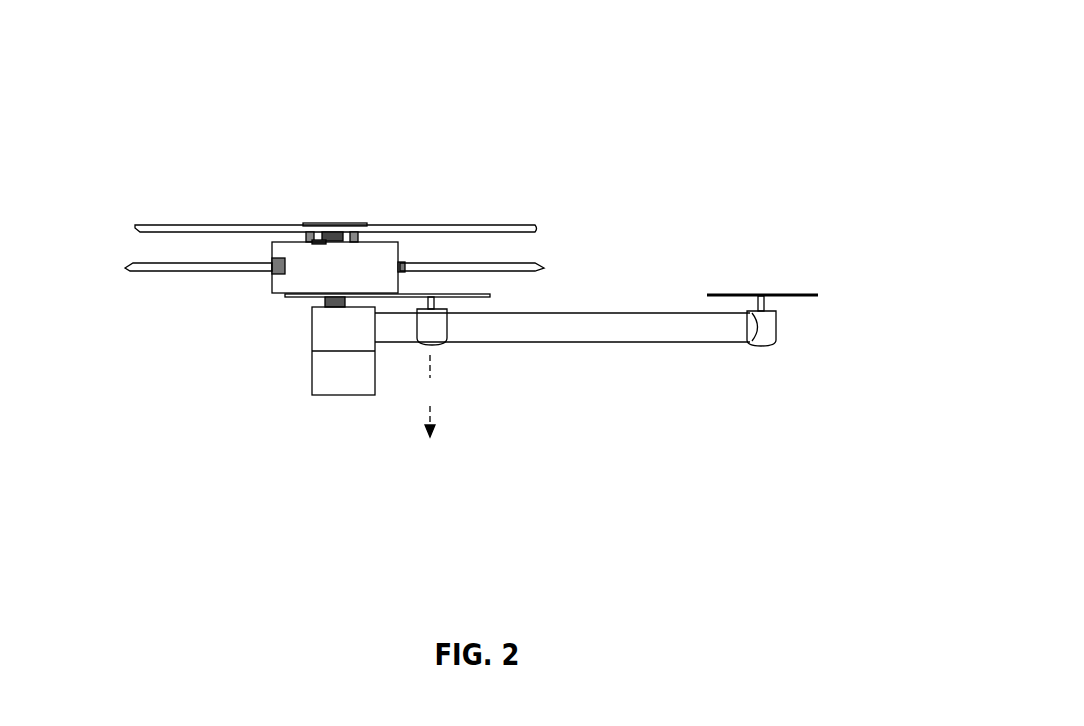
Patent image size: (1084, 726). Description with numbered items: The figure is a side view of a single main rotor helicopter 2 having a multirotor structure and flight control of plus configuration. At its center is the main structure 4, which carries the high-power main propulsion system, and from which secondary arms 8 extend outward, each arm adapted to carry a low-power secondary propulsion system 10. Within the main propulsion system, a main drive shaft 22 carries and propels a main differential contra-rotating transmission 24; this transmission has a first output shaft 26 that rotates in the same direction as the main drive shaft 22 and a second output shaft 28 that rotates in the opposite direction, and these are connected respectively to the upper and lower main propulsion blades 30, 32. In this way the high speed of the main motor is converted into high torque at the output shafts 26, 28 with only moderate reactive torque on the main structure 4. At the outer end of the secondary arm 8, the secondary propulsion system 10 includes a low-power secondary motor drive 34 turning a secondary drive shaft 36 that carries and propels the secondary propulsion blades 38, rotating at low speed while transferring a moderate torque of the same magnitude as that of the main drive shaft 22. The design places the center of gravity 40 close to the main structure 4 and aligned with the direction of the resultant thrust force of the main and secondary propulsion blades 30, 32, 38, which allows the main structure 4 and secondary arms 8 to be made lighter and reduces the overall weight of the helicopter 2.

The single main rotor helicopter 2 is at (503, 131).
The main structure 4 is at (343, 372).
The secondary arm 8 is at (667, 325).
The secondary propulsion system 10 is at (433, 330).
The main drive shaft 22 is at (312, 302).
The main differential contra-rotating transmission 24 is at (316, 238).
The first output shaft 26 is at (332, 223).
The second output shaft 28 is at (385, 267).
The main propulsion blades 30 is at (240, 227).
The main propulsion blades 32 is at (182, 268).
The secondary motor drive 34 is at (777, 330).
The secondary drive shaft 36 is at (440, 300).
The secondary propulsion blades 38 is at (793, 294).
The center of gravity 40 is at (407, 408).